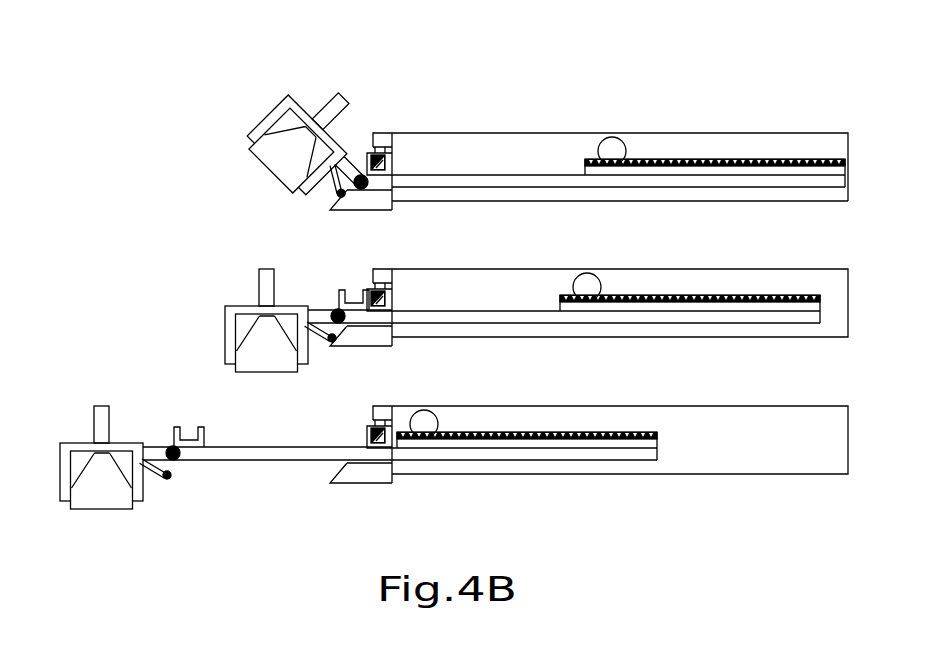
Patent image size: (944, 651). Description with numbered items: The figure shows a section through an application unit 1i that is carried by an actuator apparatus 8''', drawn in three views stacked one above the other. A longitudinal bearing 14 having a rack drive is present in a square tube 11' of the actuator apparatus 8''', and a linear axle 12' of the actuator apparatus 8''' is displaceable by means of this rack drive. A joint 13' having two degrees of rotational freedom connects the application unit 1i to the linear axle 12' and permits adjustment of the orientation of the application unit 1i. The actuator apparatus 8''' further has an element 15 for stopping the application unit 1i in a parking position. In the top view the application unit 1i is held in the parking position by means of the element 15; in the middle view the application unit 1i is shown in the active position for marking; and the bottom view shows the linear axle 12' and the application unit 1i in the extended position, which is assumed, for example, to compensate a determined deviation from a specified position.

The actuator apparatus 8''' is at (454, 303).
The application unit 1i is at (292, 112).
The square tube 11' is at (610, 131).
The linear axle 12' is at (589, 213).
The joint 13' is at (365, 113).
The longitudinal bearing 14 is at (757, 160).
The element 15 is at (386, 157).